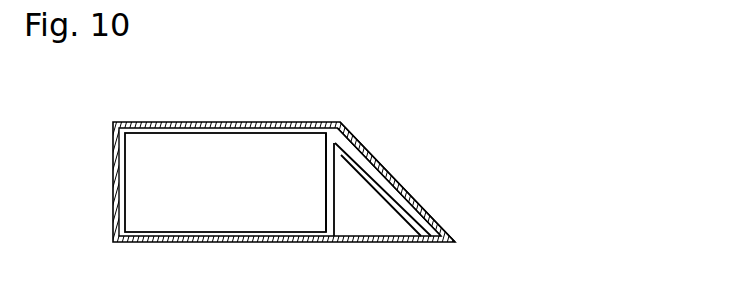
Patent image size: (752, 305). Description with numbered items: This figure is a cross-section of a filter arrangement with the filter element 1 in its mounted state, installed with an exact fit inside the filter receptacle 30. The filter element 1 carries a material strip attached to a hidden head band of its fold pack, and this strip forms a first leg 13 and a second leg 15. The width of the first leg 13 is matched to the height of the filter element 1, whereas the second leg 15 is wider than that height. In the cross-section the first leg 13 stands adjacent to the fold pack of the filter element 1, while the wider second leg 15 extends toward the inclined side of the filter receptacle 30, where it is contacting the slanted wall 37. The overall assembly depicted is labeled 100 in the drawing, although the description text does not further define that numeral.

The display device 100 is at (367, 99).
The filter receptacle 30 is at (158, 243).
The slanted wall 37 is at (410, 192).
The filter element 1 is at (283, 212).
The first leg 13 is at (337, 220).
The second leg 15 is at (378, 184).